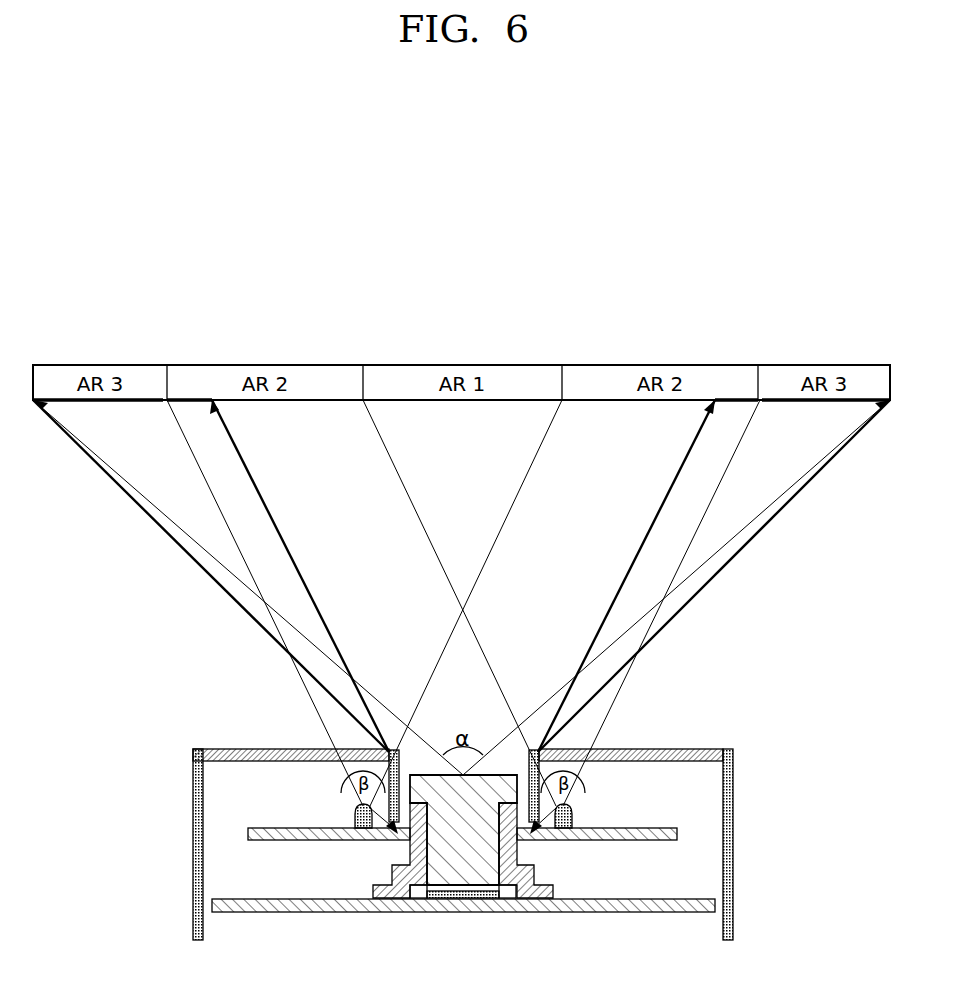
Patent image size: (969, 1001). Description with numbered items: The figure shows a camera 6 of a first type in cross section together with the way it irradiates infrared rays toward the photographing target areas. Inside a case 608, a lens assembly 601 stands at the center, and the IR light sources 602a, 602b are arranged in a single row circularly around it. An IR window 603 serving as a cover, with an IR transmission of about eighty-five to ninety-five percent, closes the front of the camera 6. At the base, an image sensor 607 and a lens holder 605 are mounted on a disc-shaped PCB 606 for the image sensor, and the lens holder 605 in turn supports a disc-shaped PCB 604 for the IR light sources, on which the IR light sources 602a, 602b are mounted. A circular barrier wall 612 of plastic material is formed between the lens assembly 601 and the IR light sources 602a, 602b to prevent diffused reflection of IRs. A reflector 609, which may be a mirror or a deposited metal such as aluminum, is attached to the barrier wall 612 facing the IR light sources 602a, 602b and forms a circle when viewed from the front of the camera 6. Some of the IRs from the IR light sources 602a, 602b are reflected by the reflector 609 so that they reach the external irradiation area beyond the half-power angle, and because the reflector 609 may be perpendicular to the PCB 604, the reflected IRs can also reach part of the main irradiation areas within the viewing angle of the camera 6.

The camera 6 is at (749, 692).
The lens assembly 601 is at (482, 845).
The IR light source 602a is at (354, 809).
The IR light source 602b is at (573, 809).
The IR window 603 is at (238, 748).
The PCB for IR light source 604 is at (608, 841).
The lens holder 605 is at (392, 870).
The PCB for image sensor 606 is at (610, 913).
The image sensor 607 is at (435, 900).
The case 608 is at (193, 853).
The reflector 609 is at (499, 888).
The barrier wall 612 is at (400, 762).